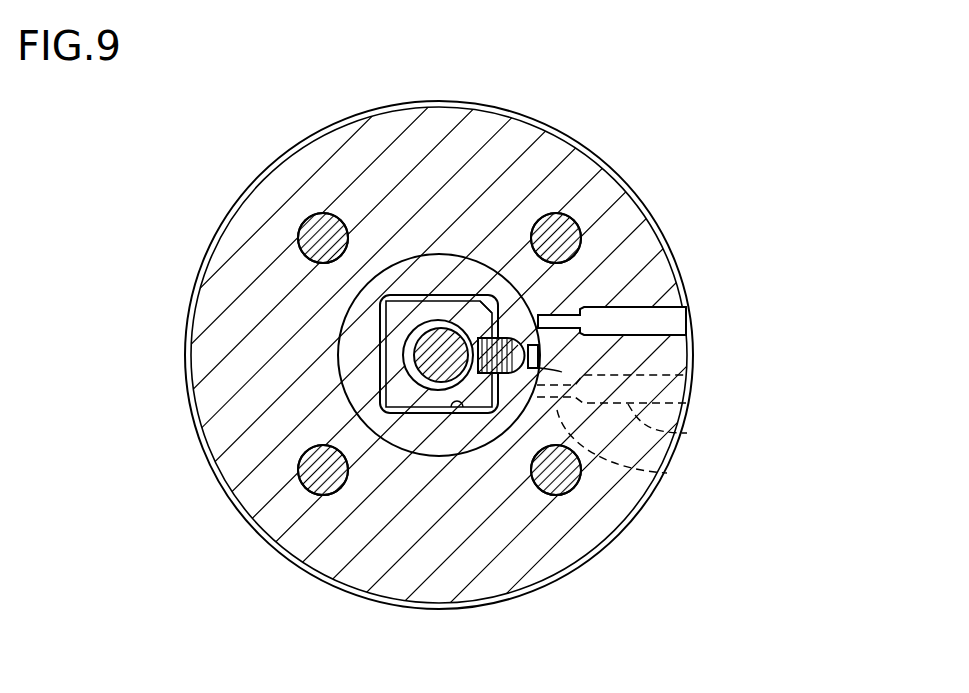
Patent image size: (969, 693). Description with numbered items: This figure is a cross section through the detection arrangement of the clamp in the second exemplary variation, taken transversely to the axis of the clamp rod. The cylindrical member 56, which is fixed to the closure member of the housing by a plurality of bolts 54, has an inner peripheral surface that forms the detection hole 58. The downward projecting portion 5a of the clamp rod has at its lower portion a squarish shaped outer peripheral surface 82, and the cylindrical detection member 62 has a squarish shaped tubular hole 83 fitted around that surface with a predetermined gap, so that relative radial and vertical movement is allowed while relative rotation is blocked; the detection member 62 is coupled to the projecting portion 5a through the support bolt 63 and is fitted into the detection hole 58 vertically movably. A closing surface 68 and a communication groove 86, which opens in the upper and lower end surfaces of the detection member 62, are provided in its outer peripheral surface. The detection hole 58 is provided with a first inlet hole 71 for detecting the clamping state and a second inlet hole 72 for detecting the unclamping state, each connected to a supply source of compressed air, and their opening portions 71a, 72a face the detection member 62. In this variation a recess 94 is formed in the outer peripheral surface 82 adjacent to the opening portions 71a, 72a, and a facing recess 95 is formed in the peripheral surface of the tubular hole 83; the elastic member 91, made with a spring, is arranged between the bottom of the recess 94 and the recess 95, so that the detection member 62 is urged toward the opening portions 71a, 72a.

The projecting portion 5a is at (390, 412).
The bolts 54 is at (312, 233).
The cylindrical member 56 is at (570, 134).
The detection hole 58 is at (342, 383).
The detection member 62 is at (492, 429).
The support bolt 63 is at (423, 352).
The closing surface 68 is at (545, 371).
The first inlet hole 71 is at (687, 433).
The opening portion 71a is at (667, 473).
The second inlet hole 72 is at (636, 308).
The opening portion 72a is at (558, 308).
The squarish shaped outer peripheral surface 82 is at (392, 402).
The squarish shaped tubular hole 83 is at (455, 414).
The communication groove 86 is at (543, 353).
The elastic member 91 is at (496, 337).
The recess 94 is at (484, 338).
The recess 95 is at (505, 295).